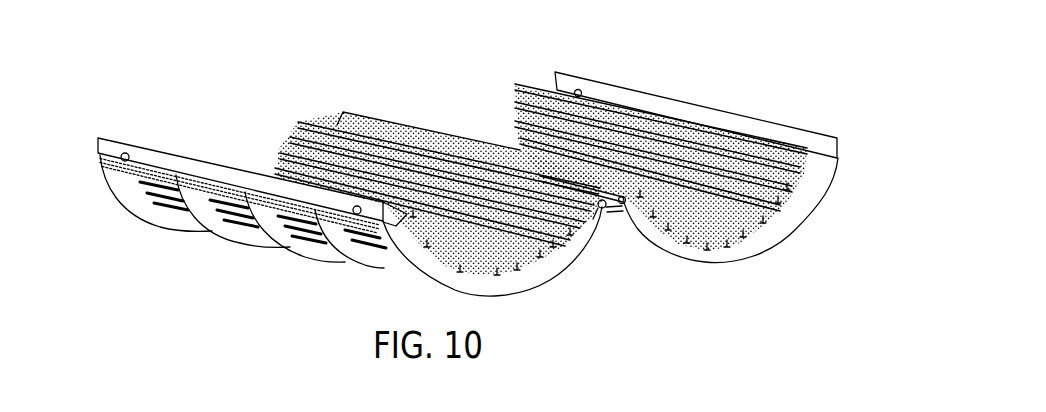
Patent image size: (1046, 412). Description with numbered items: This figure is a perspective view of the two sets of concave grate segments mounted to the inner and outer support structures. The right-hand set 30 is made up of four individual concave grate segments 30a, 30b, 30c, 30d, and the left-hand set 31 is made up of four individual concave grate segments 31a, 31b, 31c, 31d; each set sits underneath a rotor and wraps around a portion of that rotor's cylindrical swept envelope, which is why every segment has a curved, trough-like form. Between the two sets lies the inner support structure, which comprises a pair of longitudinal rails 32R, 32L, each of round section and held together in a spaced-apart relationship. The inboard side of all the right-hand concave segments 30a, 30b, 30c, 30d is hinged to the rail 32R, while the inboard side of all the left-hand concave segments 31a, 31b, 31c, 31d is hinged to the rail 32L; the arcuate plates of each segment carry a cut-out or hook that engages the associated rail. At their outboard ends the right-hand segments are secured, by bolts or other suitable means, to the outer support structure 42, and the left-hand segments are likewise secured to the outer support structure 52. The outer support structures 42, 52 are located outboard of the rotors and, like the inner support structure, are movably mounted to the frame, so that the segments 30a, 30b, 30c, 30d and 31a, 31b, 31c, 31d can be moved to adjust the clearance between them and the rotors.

The set of concave grate segments 30 is at (800, 240).
The concave grate segment 30a is at (803, 150).
The concave grate segment 30b is at (726, 176).
The concave grate segment 30c is at (650, 130).
The concave grate segment 30d is at (572, 157).
The set of concave grate segments 31 is at (558, 290).
The concave grate segment 31a is at (382, 247).
The concave grate segment 31b is at (312, 232).
The concave grate segment 31c is at (242, 213).
The concave grate segment 31d is at (160, 190).
The longitudinal rail 32R is at (598, 213).
The longitudinal rail 32L is at (628, 215).
The outer support structure 42 is at (615, 97).
The outer support structure 52 is at (167, 158).